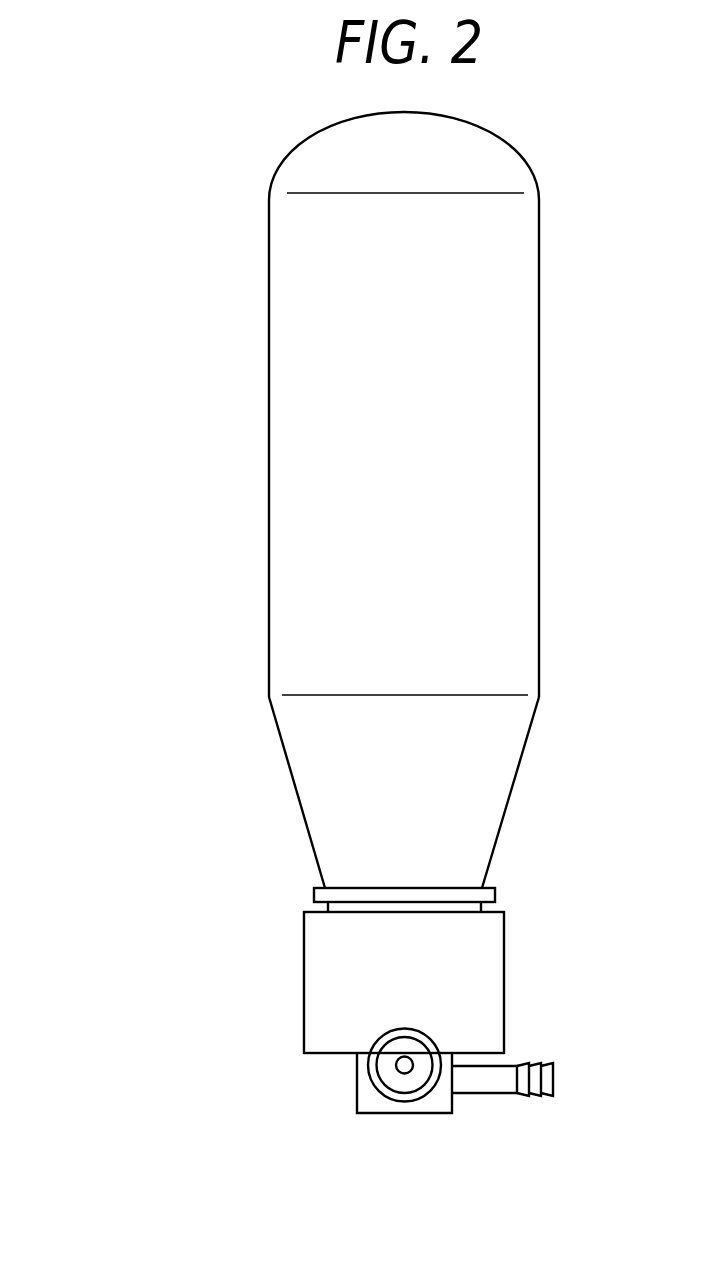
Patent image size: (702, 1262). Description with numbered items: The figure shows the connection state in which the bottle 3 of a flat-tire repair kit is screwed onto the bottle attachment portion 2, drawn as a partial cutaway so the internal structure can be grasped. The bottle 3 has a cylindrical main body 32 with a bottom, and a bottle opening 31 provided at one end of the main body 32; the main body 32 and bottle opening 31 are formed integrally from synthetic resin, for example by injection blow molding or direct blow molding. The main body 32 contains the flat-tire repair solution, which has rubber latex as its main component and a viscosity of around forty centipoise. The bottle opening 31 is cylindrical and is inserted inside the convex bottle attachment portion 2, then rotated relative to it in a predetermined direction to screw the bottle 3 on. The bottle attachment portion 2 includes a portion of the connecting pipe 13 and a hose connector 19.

The bottle attachment portion 2 is at (397, 1042).
The bottle 3 is at (301, 512).
The connecting pipe 13 is at (407, 1083).
The hose connector 19 is at (482, 1085).
The bottle opening 31 is at (362, 907).
The main body 32 is at (269, 530).